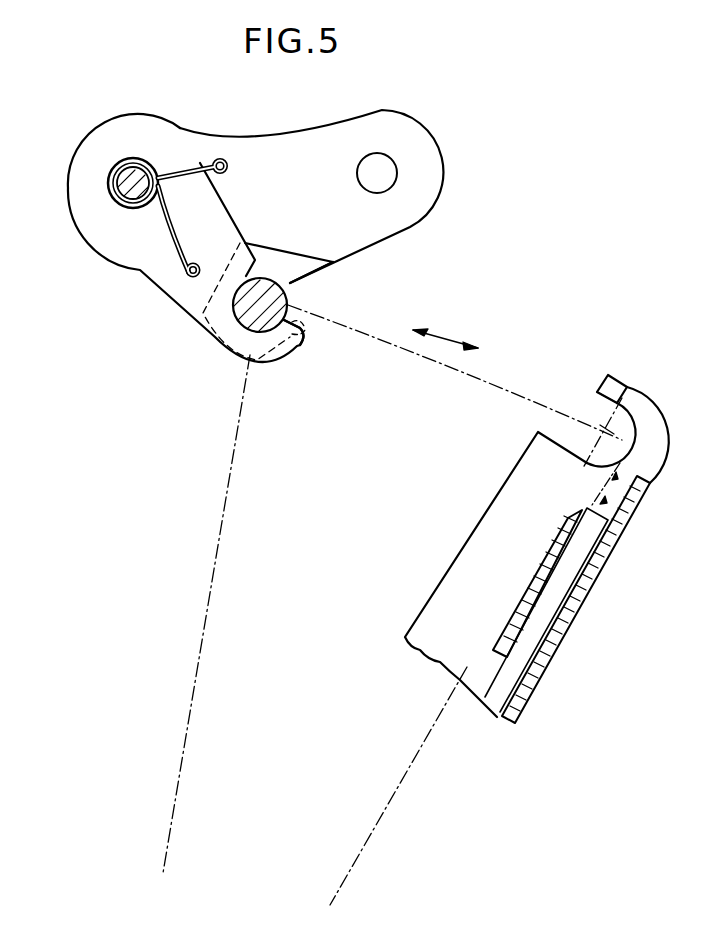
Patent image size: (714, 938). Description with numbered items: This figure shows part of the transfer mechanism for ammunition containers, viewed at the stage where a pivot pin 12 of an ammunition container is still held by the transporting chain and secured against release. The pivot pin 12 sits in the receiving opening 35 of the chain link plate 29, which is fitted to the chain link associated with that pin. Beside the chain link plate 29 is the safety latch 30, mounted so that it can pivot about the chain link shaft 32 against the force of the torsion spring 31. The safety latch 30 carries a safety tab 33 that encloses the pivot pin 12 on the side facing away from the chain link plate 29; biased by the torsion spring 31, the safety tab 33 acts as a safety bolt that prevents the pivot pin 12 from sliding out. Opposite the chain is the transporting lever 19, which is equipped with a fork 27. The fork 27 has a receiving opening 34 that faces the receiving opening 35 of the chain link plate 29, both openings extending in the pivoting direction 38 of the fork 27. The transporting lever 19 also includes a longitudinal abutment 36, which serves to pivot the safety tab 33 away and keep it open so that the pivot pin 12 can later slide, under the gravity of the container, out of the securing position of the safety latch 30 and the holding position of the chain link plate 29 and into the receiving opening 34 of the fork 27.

The pivot pin 12 is at (258, 303).
The transporting lever 19 is at (490, 604).
The fork 27 is at (618, 385).
The chain link plate 29 is at (282, 143).
The safety latch 30 is at (228, 212).
The torsion spring 31 is at (212, 160).
The chain link shaft 32 is at (126, 185).
The safety tab 33 is at (303, 326).
The receiving opening 34 is at (597, 408).
The receiving opening 35 is at (300, 284).
The longitudinal abutment 36 is at (583, 512).
The pivoting direction 38 is at (445, 336).